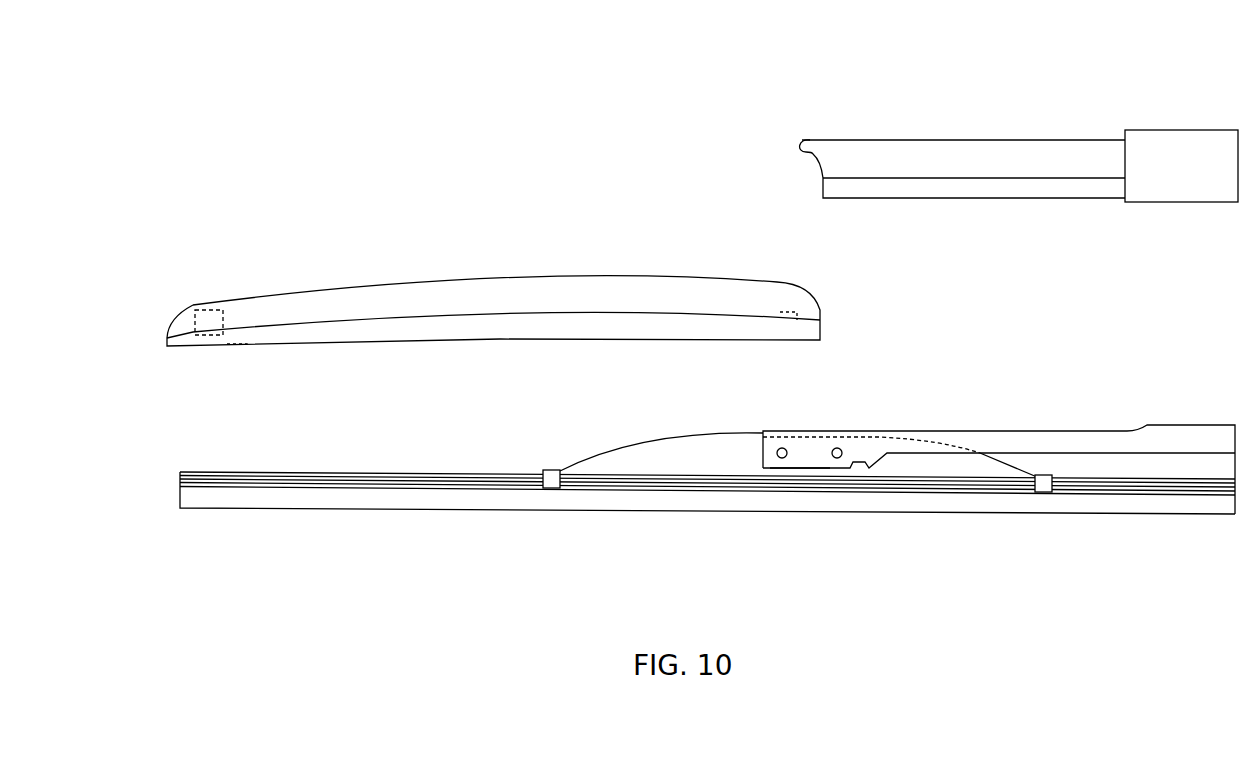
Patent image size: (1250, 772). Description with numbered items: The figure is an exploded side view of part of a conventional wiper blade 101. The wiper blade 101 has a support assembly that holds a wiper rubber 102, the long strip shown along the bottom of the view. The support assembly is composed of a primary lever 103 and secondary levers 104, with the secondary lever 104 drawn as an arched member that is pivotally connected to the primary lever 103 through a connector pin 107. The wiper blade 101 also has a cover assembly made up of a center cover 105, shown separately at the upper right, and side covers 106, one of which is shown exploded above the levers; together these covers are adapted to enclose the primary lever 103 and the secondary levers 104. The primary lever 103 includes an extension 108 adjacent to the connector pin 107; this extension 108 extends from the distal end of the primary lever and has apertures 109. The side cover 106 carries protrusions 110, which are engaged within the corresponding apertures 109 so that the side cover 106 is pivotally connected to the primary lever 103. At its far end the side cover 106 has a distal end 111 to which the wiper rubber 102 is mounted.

The wiper blade 101 is at (696, 148).
The wiper rubber 102 is at (472, 508).
The primary lever 103 is at (1002, 431).
The secondary lever 104 is at (666, 441).
The center cover 105 is at (1045, 140).
The side cover 106 is at (532, 278).
The connector pin 107 is at (838, 448).
The extension 108 is at (795, 468).
The apertures 109 is at (777, 455).
The protrusions 110 is at (780, 312).
The distal end 111 is at (167, 332).